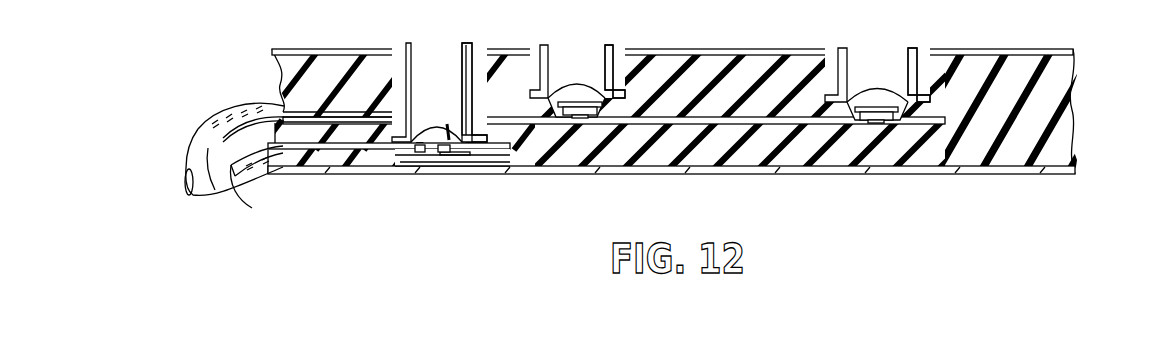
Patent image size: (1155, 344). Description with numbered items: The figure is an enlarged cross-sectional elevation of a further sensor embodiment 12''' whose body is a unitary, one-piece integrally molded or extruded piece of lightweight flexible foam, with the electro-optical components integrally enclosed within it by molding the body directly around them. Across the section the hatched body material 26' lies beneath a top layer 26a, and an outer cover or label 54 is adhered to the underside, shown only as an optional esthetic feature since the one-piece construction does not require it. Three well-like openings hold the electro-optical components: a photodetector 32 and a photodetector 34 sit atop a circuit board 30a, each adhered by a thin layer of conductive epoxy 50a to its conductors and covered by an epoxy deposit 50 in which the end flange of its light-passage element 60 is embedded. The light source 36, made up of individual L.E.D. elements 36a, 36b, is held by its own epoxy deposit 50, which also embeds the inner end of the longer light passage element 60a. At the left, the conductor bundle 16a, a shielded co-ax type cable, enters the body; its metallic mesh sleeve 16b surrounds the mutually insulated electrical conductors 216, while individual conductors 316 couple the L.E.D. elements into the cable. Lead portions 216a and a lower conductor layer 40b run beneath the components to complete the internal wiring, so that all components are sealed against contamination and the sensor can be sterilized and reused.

The sensor assembly embodiment 12''' is at (671, 94).
The conductor bundle 16a is at (236, 108).
The metallic mesh sleeve 16b is at (198, 196).
The individual conductors 316 is at (252, 208).
The electrical conductors 216 is at (338, 147).
The lead strip conductor 216a is at (338, 113).
The lower conductor layer 40b is at (400, 160).
The epoxy deposit 50 is at (423, 137).
The conductive epoxy layer 50a is at (590, 118).
The light source 36 is at (450, 138).
The L.E.D. element 36a is at (413, 152).
The L.E.D. element 36b is at (449, 152).
The light passage element 60a is at (466, 47).
The light-passage elements 60 is at (611, 50).
The photodetector 34 is at (588, 103).
The photodetector 32 is at (886, 104).
The circuit board 30a is at (746, 116).
The top plate 26a is at (1016, 52).
The encapsulant body 26' is at (702, 110).
The outer cover layer 54 is at (1035, 173).